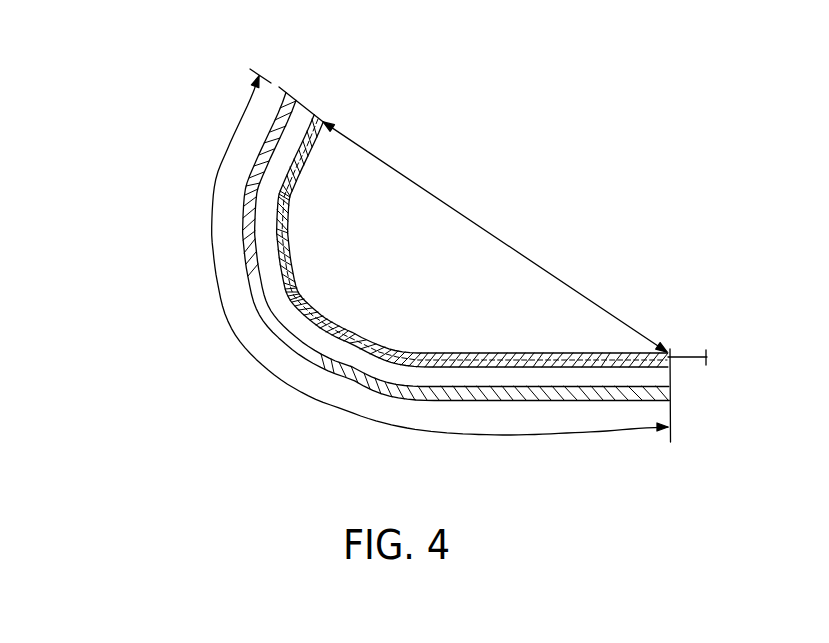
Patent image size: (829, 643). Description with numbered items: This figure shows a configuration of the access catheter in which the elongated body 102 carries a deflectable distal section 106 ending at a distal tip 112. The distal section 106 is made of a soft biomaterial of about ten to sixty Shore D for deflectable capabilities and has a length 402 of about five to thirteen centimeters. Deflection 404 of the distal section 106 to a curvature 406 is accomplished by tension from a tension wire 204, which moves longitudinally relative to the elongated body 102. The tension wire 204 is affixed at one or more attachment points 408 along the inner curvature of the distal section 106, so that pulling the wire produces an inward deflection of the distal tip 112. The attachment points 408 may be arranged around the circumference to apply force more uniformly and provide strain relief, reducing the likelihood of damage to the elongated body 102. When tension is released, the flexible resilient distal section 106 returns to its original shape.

The elongated body 102 is at (142, 121).
The distal section 106 is at (432, 352).
The distal tip 112 is at (291, 92).
The tension wire 204 is at (688, 355).
The length 402 is at (277, 374).
The deflection 404 is at (318, 103).
The curvature 406 is at (495, 237).
The attachment points 408 is at (328, 124).